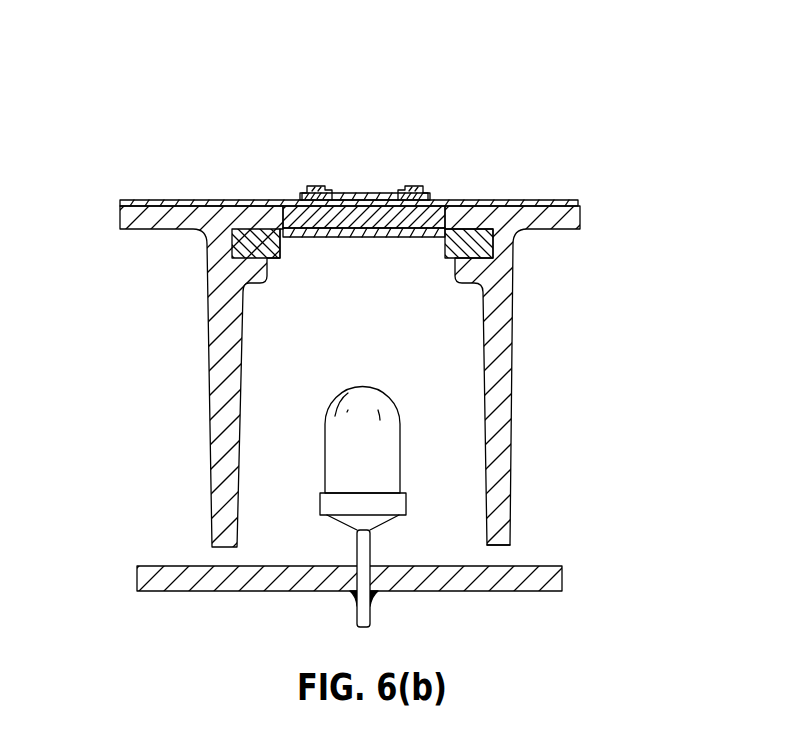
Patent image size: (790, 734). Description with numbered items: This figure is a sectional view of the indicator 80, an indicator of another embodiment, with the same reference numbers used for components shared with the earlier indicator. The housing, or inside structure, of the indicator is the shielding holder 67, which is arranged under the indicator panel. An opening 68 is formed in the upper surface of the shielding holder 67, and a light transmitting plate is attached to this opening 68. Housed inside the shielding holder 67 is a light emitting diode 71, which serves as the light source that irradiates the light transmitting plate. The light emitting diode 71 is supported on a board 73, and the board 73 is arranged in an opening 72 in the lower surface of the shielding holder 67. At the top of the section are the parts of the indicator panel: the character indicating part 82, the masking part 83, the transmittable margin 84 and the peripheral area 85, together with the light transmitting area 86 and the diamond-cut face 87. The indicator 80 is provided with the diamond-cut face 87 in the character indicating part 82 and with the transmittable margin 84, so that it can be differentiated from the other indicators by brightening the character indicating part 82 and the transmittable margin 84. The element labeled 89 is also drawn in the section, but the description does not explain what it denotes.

The indicator 80 is at (175, 78).
The shielding holder 67 is at (516, 353).
The opening 68 is at (290, 200).
The light emitting diode 71 is at (400, 433).
The opening 72 is at (515, 555).
The board 73 is at (183, 567).
The character indicating part 82 is at (377, 142).
The masking part 83 is at (357, 193).
The transmittable margin 84 is at (410, 187).
The peripheral area 85 is at (517, 199).
The light transmitting area 86 is at (577, 86).
The diamond-cut face 87 is at (350, 237).
The holder block 89 is at (245, 247).